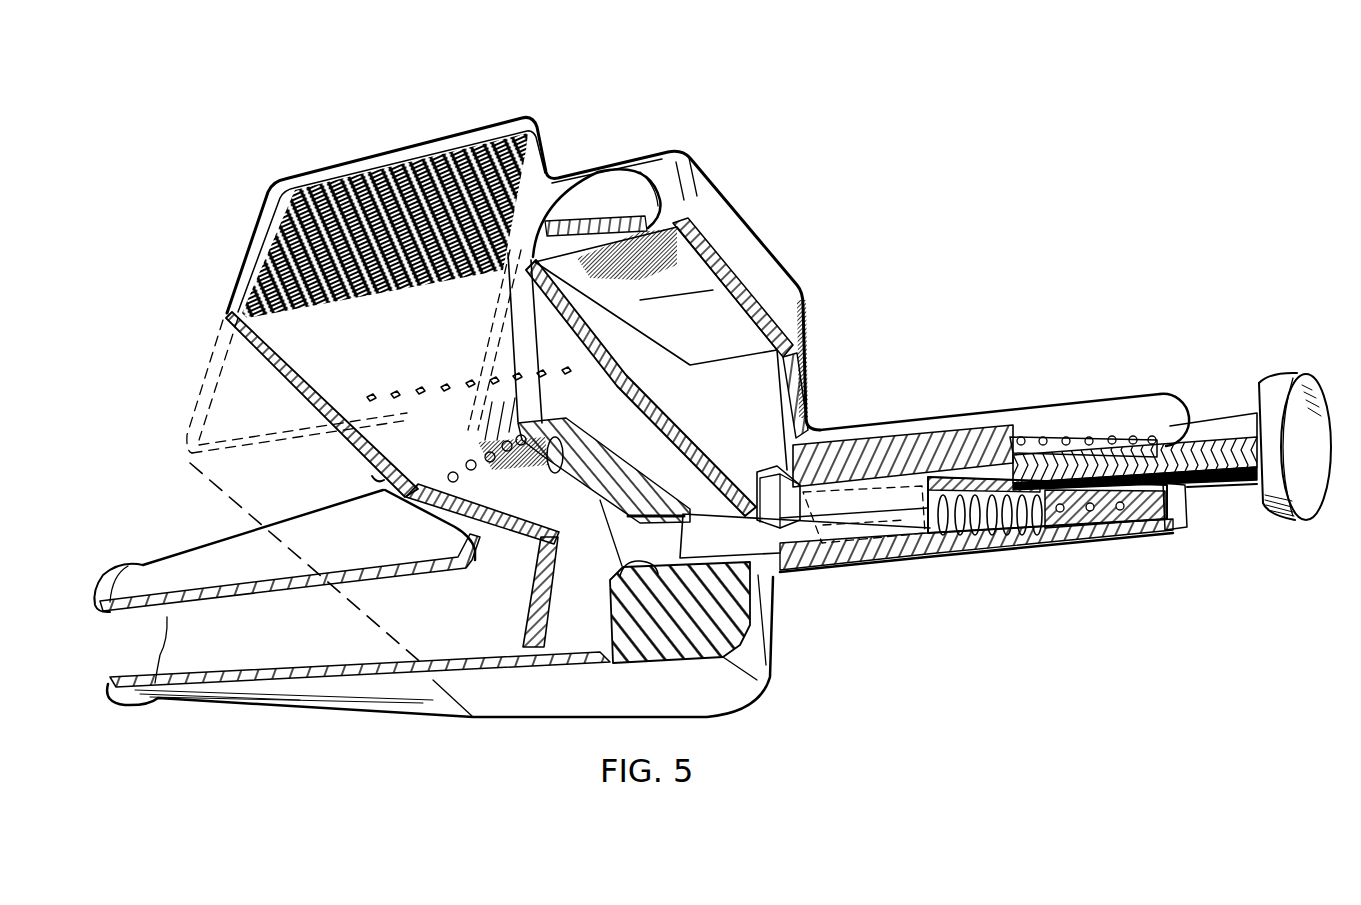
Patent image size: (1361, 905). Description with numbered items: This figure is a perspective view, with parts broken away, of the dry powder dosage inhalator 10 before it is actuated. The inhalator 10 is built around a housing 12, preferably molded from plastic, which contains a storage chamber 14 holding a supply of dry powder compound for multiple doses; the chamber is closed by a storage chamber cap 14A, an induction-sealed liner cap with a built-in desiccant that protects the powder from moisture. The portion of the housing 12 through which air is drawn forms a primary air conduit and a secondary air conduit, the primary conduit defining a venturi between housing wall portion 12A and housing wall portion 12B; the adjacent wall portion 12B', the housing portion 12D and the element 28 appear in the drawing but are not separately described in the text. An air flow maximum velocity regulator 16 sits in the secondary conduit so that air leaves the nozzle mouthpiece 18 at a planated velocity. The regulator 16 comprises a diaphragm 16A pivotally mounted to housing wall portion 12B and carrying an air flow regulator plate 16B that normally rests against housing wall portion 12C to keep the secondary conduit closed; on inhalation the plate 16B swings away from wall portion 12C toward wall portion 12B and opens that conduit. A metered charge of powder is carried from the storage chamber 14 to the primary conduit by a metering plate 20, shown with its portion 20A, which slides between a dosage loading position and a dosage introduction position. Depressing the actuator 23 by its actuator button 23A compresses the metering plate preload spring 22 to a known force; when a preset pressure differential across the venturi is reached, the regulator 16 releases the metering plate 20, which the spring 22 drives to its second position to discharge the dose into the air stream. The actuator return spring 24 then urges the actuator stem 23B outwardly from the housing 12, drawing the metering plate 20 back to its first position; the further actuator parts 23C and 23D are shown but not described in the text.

The dry powder dosage inhalator 10 is at (167, 80).
The housing 12 is at (312, 400).
The housing wall portion 12A is at (620, 392).
The housing wall portion 12B is at (604, 470).
The lower wall portion 12B' is at (590, 592).
The housing wall portion 12C is at (375, 480).
The cylindrical barrel 12D is at (1018, 440).
The storage chamber 14 is at (715, 341).
The storage chamber cap 14A is at (625, 165).
The air flow maximum velocity regulator 16 is at (501, 578).
The diaphragm 16A is at (472, 470).
The air flow regulator plate 16B is at (580, 528).
The nozzle mouthpiece 18 is at (140, 560).
The metering plate 20 is at (725, 550).
The tab 20A is at (770, 508).
The metering plate preload spring 22 is at (988, 540).
The actuator 23 is at (1140, 303).
The actuator button 23A is at (1297, 515).
The actuator stem 23B is at (1227, 492).
The shaft 23C is at (1190, 422).
The piston 23D is at (1067, 538).
The actuator return spring 24 is at (1060, 440).
The grid 28 is at (382, 361).